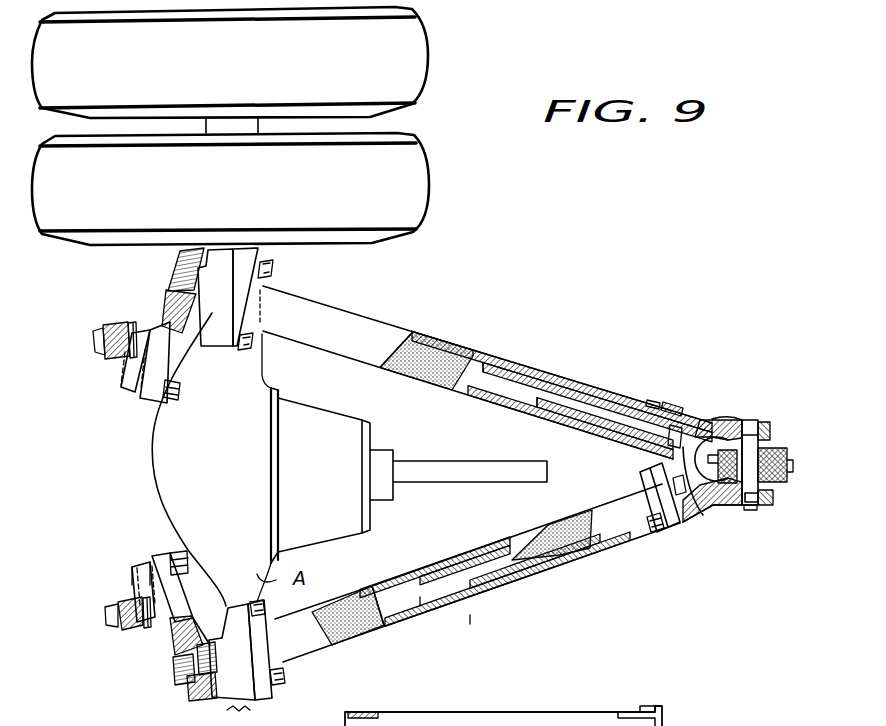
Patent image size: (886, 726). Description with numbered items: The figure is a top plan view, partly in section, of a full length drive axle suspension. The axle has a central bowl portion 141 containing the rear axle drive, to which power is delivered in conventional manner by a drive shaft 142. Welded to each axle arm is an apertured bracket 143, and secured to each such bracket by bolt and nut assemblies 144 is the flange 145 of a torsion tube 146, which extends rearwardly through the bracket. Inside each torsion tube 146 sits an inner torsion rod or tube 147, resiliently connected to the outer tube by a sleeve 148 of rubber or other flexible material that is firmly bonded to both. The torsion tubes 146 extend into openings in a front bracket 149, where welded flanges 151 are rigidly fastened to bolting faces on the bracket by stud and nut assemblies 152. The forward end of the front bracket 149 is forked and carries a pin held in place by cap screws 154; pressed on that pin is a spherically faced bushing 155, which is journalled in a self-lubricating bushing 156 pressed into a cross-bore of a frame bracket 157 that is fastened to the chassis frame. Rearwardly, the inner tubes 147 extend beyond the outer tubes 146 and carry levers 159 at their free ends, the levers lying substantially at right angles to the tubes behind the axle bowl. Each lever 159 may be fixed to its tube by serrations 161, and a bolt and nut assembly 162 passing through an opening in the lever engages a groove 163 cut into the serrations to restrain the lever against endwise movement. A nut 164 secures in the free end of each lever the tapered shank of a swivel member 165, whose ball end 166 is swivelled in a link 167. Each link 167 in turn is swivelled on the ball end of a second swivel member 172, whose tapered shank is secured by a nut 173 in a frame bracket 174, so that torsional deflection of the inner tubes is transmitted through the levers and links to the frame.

The central bowl portion 141 is at (243, 494).
The drive shaft 142 is at (438, 461).
The apertured bracket 143 is at (251, 250).
The bolt and nut assembly 144 is at (273, 270).
The flange 145 is at (265, 308).
The torsion tube 146 is at (358, 327).
The inner torsion rod or tube 147 is at (480, 372).
The sleeve 148 is at (441, 348).
The front bracket 149 is at (728, 510).
The welded flange 151 is at (667, 403).
The stud and nut assembly 152 is at (650, 540).
The cap screw 154 is at (774, 500).
The spherically faced bushing 155 is at (773, 446).
The self-lubricating bushing 156 is at (731, 418).
The frame bracket 157 is at (705, 515).
The lever 159 is at (157, 335).
The serrations 161 is at (221, 250).
The bolt and nut assembly 162 is at (190, 315).
The groove 163 is at (756, 510).
The nut 164 is at (178, 393).
The swivel member 165 is at (122, 393).
The ball end 166 is at (124, 385).
The link 167 is at (140, 330).
The swivel member 172 is at (135, 338).
The nut 173 is at (95, 338).
The frame bracket 174 is at (108, 352).